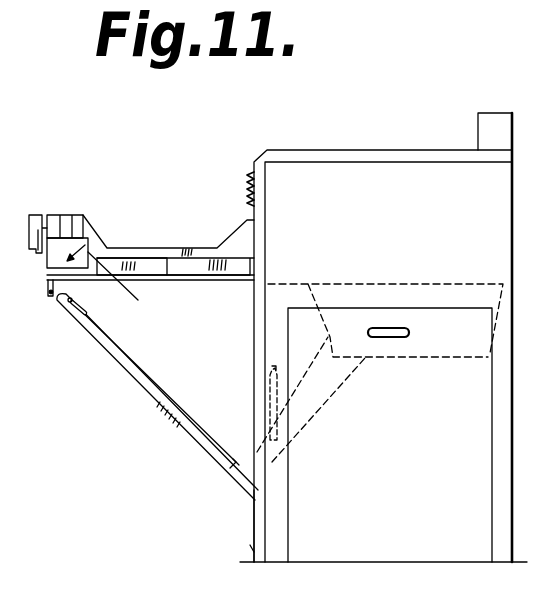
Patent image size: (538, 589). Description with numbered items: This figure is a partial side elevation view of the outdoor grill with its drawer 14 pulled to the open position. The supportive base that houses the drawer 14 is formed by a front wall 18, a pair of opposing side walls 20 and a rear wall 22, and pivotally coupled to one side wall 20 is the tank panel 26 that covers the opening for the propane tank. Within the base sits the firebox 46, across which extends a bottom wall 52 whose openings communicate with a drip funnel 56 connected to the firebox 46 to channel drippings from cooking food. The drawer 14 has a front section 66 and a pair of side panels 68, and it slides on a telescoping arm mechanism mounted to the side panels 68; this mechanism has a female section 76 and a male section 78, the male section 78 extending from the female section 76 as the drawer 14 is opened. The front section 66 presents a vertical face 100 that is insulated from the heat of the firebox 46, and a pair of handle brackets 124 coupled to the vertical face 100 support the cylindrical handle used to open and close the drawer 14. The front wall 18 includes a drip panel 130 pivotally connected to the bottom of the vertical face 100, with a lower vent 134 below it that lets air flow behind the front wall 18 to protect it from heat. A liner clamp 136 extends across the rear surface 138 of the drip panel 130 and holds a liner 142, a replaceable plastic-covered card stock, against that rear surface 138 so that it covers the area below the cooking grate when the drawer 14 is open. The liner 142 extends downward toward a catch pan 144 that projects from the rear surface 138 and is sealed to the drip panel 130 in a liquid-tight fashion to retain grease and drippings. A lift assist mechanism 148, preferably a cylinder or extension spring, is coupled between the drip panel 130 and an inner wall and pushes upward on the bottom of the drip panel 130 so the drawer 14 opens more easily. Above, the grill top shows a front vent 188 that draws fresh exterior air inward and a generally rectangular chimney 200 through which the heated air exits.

The drawer 14 is at (312, 521).
The front wall 18 is at (250, 505).
The side wall 20 is at (505, 477).
The rear wall 22 is at (510, 208).
The tank panel 26 is at (445, 555).
The firebox 46 is at (395, 283).
The bottom wall 52 is at (463, 358).
The drip funnel 56 is at (325, 403).
The front section 66 is at (49, 215).
The side panel 68 is at (241, 234).
The female section 76 is at (238, 274).
The male section 78 is at (152, 277).
The vertical face 100 is at (47, 286).
The handle bracket 124 is at (36, 212).
The drip panel 130 is at (147, 393).
The lower vent 134 is at (250, 550).
The liner clamp 136 is at (90, 311).
The rear surface 138 is at (68, 297).
The liner 142 is at (163, 390).
The catch pan 144 is at (252, 452).
The lift assist mechanism 148 is at (270, 380).
The front vent 188 is at (252, 173).
The chimney 200 is at (478, 113).